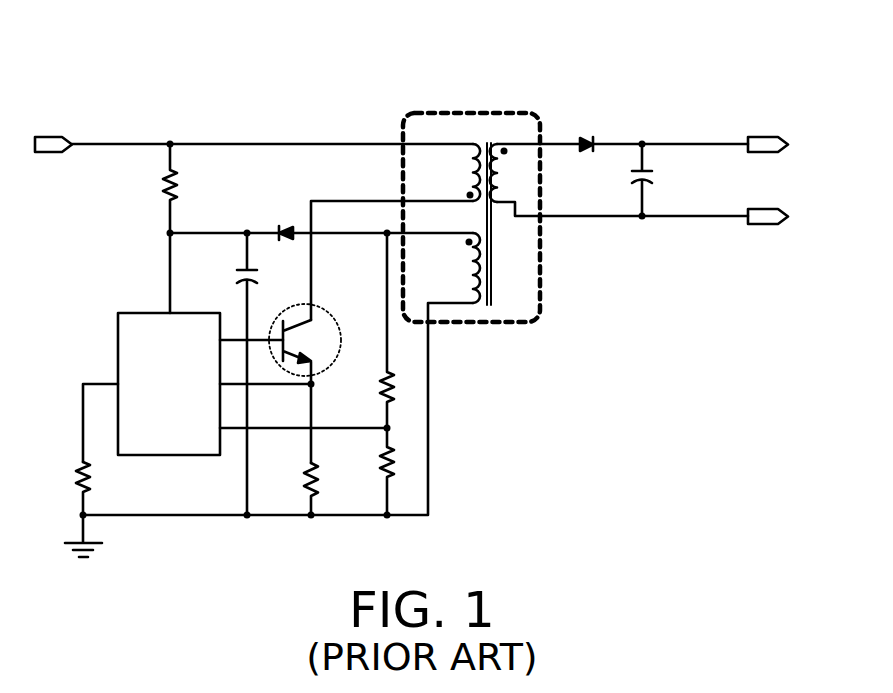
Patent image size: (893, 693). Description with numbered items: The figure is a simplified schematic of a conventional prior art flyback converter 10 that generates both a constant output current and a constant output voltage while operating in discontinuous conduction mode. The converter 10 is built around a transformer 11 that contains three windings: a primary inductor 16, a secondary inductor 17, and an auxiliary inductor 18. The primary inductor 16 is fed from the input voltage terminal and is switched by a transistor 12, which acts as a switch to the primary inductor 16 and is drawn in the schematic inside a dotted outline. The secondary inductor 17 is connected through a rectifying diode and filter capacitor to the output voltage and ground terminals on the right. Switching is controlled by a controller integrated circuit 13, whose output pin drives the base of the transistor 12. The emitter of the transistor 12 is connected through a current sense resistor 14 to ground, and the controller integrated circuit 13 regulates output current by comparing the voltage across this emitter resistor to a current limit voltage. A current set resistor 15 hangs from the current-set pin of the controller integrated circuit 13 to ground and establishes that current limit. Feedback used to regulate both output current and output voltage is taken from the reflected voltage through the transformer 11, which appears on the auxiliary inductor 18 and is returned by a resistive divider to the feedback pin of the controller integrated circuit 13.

The flyback converter 10 is at (383, 58).
The transformer 11 is at (447, 113).
The transistor T1 12 is at (324, 317).
The controller integrated circuit 13 is at (140, 313).
The current sense resistor RCS 14 is at (318, 486).
The current set resistor RISET 15 is at (76, 479).
The primary inductor 16 is at (461, 163).
The secondary inductor 17 is at (508, 163).
The auxiliary inductor 18 is at (461, 258).